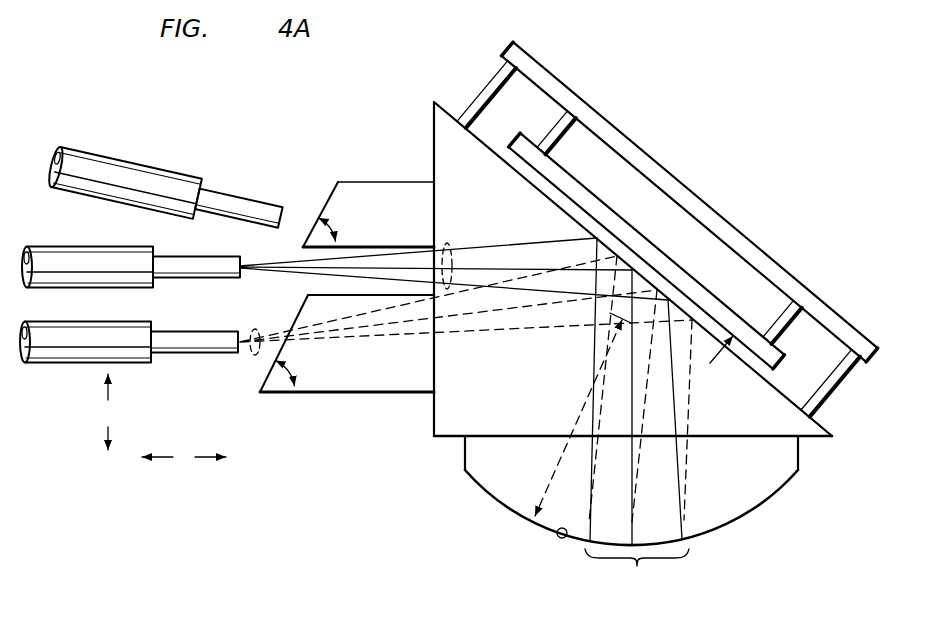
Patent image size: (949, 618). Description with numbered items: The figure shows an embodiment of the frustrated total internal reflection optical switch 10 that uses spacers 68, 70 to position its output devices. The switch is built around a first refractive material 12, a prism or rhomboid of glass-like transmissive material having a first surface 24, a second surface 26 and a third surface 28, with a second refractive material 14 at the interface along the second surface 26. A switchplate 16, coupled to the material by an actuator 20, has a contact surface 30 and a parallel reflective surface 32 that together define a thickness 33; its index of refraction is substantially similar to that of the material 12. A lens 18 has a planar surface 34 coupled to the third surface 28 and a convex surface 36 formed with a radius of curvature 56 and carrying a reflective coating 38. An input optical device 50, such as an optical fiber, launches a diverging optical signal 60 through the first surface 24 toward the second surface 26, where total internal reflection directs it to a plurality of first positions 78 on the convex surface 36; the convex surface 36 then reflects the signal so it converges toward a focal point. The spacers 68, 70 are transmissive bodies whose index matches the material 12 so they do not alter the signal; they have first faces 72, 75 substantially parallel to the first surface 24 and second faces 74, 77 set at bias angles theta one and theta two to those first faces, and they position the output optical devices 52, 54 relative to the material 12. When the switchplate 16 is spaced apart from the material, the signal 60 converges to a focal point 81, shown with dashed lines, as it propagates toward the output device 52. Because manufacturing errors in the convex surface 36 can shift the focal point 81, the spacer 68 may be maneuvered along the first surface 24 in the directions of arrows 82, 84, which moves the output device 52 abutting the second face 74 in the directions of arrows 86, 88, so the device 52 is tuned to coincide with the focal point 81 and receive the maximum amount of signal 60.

The optical switch 10 is at (282, 115).
The first refractive material 12 is at (610, 275).
The second refractive material 14 is at (503, 156).
The switchplate 16 is at (671, 251).
The lens 18 is at (627, 491).
The actuator 20 is at (683, 184).
The first surface 24 is at (433, 128).
The second surface 26 is at (445, 110).
The third surface 28 is at (812, 438).
The contact surface 30 is at (779, 367).
The reflective surface 32 is at (628, 221).
The thickness 33 is at (753, 325).
The planar surface 34 is at (540, 437).
The convex surface 36 is at (493, 497).
The coating 38 is at (559, 541).
The input optical device 50 is at (218, 279).
The output optical device 52 is at (193, 353).
The output optical device 54 is at (245, 196).
The radius of curvature 56 is at (578, 418).
The optical signal 60 is at (449, 243).
The spacer 68 is at (326, 378).
The spacer 70 is at (363, 183).
The first face 72 is at (433, 381).
The second face 74 is at (270, 377).
The first face 75 is at (433, 190).
The second face 77 is at (334, 188).
The first positions 78 is at (637, 574).
The focal point 81 is at (256, 329).
The arrow 82 is at (100, 393).
The arrow 84 is at (105, 437).
The arrow 86 is at (163, 459).
The arrow 88 is at (199, 459).